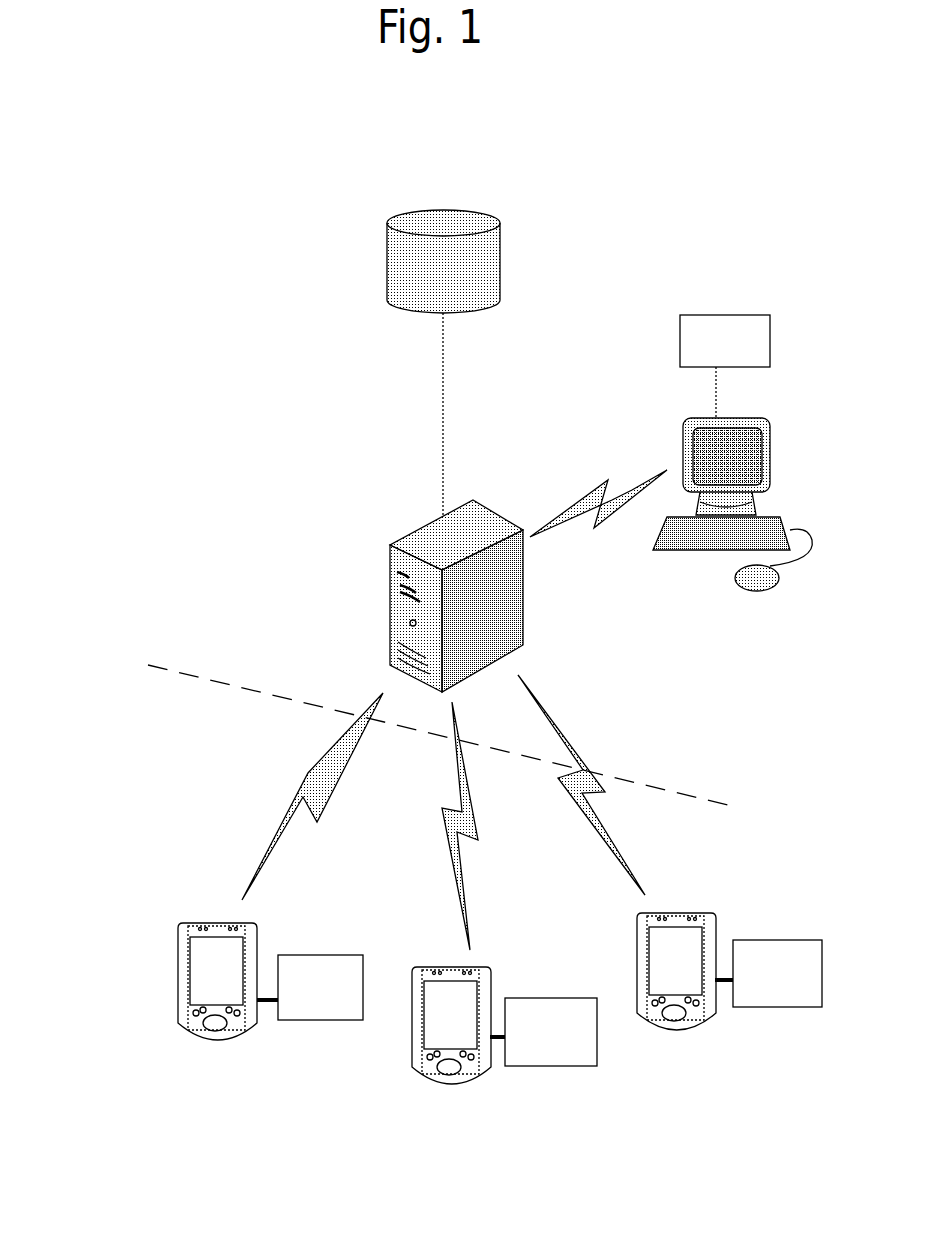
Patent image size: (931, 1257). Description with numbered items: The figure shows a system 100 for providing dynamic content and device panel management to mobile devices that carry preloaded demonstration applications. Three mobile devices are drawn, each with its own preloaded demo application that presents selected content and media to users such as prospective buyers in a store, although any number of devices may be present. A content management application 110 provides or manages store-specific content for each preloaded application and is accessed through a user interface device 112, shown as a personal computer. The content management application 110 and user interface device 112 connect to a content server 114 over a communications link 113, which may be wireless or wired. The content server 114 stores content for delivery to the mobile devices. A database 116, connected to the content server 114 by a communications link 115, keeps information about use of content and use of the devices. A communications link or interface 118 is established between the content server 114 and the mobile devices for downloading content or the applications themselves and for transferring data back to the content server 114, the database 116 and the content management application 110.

The system 100 is at (108, 178).
The content management application 110 is at (725, 366).
The user interface device 112 is at (770, 428).
The communications link 113 is at (573, 498).
The content server 114 is at (391, 567).
The communications link 115 is at (443, 420).
The database 116 is at (387, 242).
The communications link or interface 118 is at (647, 783).